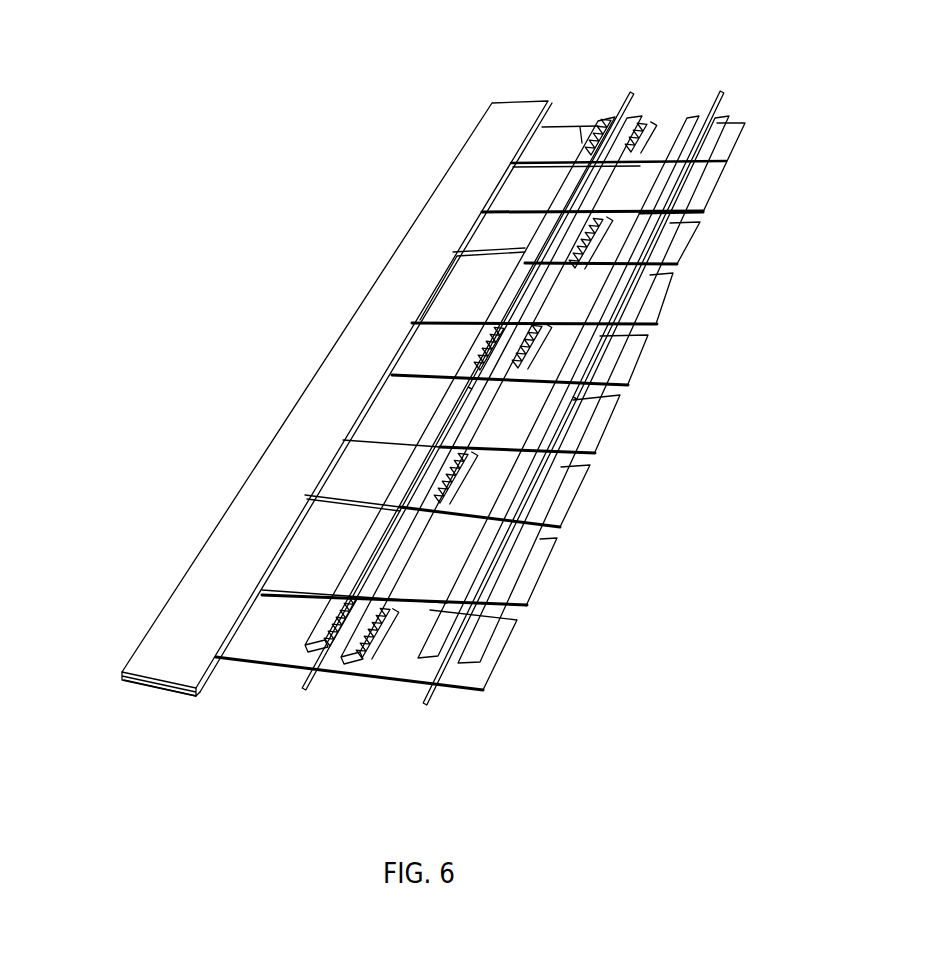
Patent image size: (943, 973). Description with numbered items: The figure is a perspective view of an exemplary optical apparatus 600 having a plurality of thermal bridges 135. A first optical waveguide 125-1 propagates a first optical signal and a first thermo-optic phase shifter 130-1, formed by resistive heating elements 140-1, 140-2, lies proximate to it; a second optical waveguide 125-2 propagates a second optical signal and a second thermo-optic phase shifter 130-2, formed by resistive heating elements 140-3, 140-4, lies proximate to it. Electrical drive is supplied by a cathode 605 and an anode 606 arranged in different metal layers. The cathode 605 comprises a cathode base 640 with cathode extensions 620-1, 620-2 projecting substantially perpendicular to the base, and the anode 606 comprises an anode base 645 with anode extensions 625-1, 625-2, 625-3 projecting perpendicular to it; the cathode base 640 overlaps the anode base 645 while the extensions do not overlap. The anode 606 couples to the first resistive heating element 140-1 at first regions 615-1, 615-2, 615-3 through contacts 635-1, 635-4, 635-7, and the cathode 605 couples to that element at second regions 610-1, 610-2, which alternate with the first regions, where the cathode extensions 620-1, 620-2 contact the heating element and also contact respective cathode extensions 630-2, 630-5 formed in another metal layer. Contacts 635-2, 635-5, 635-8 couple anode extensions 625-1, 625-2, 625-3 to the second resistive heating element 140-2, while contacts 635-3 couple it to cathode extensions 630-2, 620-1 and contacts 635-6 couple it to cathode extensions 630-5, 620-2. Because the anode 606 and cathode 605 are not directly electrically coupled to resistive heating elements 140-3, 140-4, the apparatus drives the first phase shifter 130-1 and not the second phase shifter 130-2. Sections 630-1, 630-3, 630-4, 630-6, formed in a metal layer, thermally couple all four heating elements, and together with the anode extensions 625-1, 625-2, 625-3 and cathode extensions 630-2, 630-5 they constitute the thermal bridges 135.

The optical apparatus 600 is at (313, 203).
The cathode 605 is at (257, 498).
The anode 606 is at (200, 688).
The second region 610-1 is at (410, 435).
The second region 610-2 is at (538, 203).
The first region 615-1 is at (320, 590).
The first region 615-2 is at (470, 318).
The first region 615-3 is at (588, 110).
The cathode extension 620-1 is at (373, 482).
The cathode extension 620-2 is at (500, 244).
The anode extension 625-1 is at (267, 658).
The anode extension 625-2 is at (410, 365).
The anode extension 625-3 is at (540, 155).
The section 630-1 is at (533, 573).
The cathode extension 630-2 is at (567, 490).
The section 630-3 is at (598, 417).
The section 630-4 is at (660, 296).
The cathode extension 630-5 is at (684, 239).
The section 630-6 is at (703, 195).
The contacts 635-1 is at (305, 630).
The contacts 635-2 is at (390, 665).
The contacts 635-3 is at (465, 484).
The contacts 635-4 is at (462, 338).
The contacts 635-5 is at (545, 352).
The contacts 635-6 is at (598, 240).
The contacts 635-7 is at (590, 120).
The contacts 635-8 is at (642, 143).
The cathode base 640 is at (243, 525).
The anode base 645 is at (148, 698).
The thermal bridges 135 is at (483, 431).
The first optical waveguide 125-1 is at (630, 92).
The second optical waveguide 125-2 is at (722, 92).
The first thermo-optic phase shifter 130-1 is at (330, 690).
The second thermo-optic phase shifter 130-2 is at (460, 703).
The first resistive heating element 140-1 is at (603, 118).
The second resistive heating element 140-2 is at (633, 115).
The resistive heating element 140-3 is at (696, 115).
The resistive heating element 140-4 is at (728, 113).